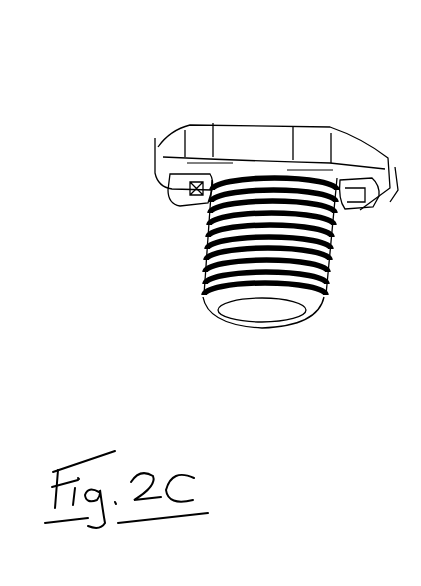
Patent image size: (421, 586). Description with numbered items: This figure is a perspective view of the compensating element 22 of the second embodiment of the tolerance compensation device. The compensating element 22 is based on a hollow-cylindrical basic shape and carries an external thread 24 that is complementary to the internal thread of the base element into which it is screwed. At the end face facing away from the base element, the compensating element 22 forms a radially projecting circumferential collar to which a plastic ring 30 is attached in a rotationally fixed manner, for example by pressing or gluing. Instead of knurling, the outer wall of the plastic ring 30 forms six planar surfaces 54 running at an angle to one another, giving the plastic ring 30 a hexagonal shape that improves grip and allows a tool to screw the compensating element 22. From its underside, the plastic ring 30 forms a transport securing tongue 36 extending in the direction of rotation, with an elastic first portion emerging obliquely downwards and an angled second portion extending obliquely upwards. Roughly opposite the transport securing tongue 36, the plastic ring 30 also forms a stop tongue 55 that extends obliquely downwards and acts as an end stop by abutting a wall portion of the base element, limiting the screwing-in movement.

The compensating element 22 is at (238, 350).
The external thread 24 is at (203, 268).
The plastic ring 30 is at (165, 178).
The transport securing tongue 36 is at (352, 200).
The planar surfaces 54 is at (170, 150).
The stop tongue 55 is at (193, 197).